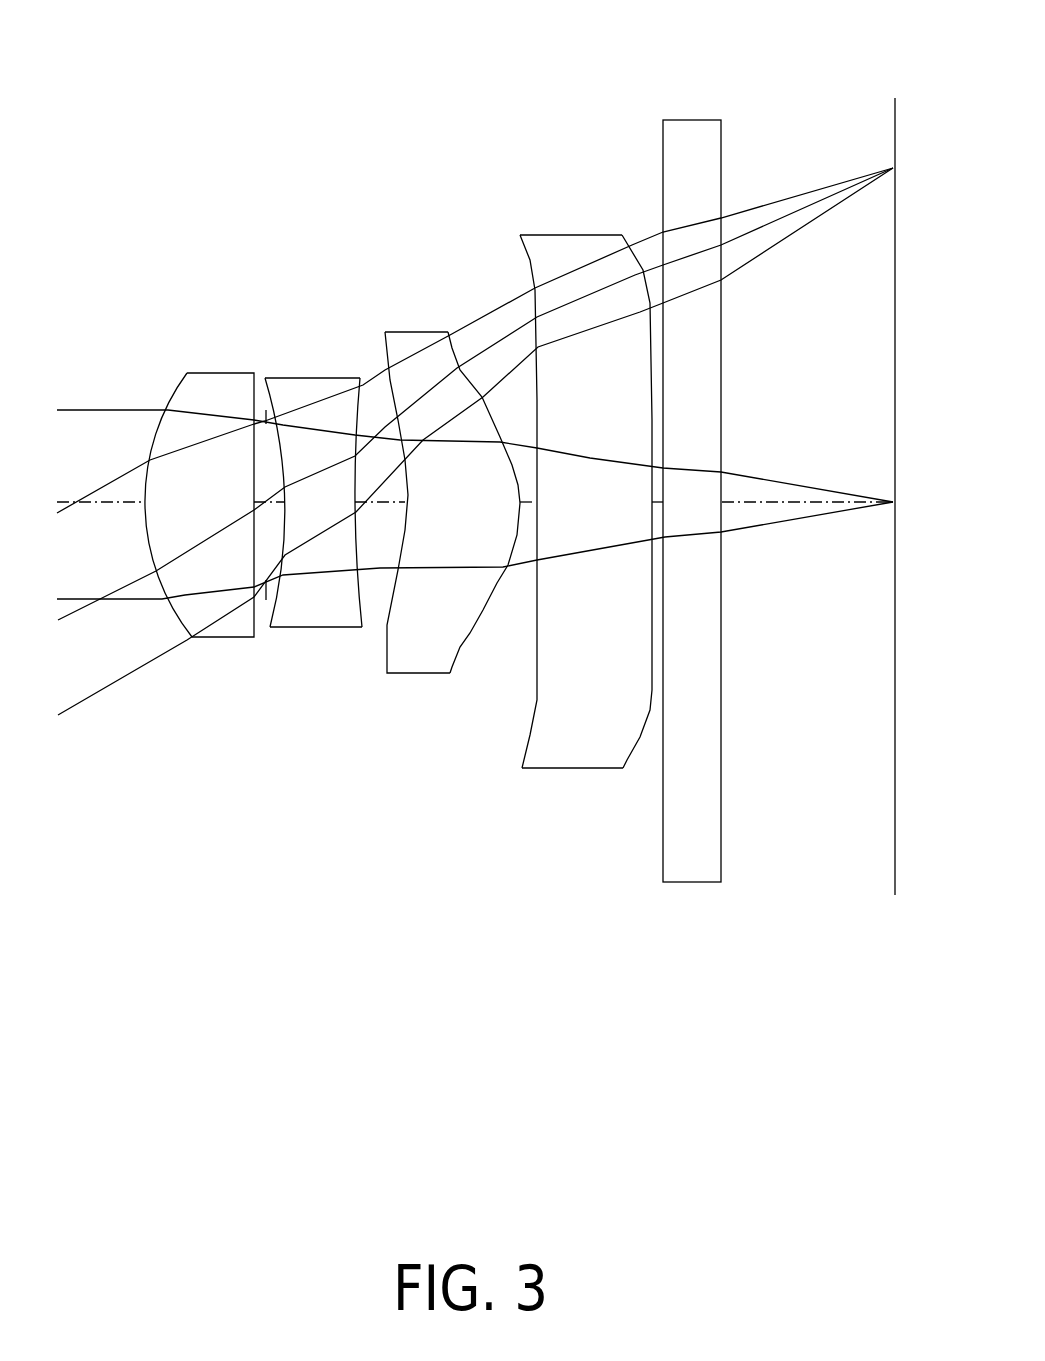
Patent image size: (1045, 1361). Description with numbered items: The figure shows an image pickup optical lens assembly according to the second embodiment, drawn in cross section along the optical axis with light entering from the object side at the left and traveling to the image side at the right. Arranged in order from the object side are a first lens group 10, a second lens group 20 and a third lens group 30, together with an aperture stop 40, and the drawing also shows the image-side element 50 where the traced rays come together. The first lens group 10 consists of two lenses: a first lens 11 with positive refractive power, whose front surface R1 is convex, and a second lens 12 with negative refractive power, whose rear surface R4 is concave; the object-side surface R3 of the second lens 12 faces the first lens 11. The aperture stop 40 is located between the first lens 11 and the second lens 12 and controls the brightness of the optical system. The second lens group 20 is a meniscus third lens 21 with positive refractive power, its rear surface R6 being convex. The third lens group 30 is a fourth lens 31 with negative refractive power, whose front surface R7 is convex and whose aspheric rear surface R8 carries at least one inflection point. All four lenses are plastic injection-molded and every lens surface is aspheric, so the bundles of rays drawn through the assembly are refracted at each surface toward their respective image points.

The first lens group 10 is at (222, 362).
The first lens 11 is at (178, 565).
The second lens 12 is at (318, 578).
The second lens group 20 is at (413, 323).
The third lens 21 is at (407, 603).
The third lens group 30 is at (570, 222).
The fourth lens 31 is at (575, 685).
The aperture stop 40 is at (255, 403).
The image plane 50 is at (892, 148).
The front surface of the first lens R1 is at (182, 601).
The object-side surface of second lens R3 is at (264, 613).
The rear surface of the second lens R4 is at (354, 581).
The rear surface of the third lens R6 is at (465, 601).
The front surface of the fourth lens R7 is at (535, 701).
The rear surface of the fourth lens R8 is at (650, 708).